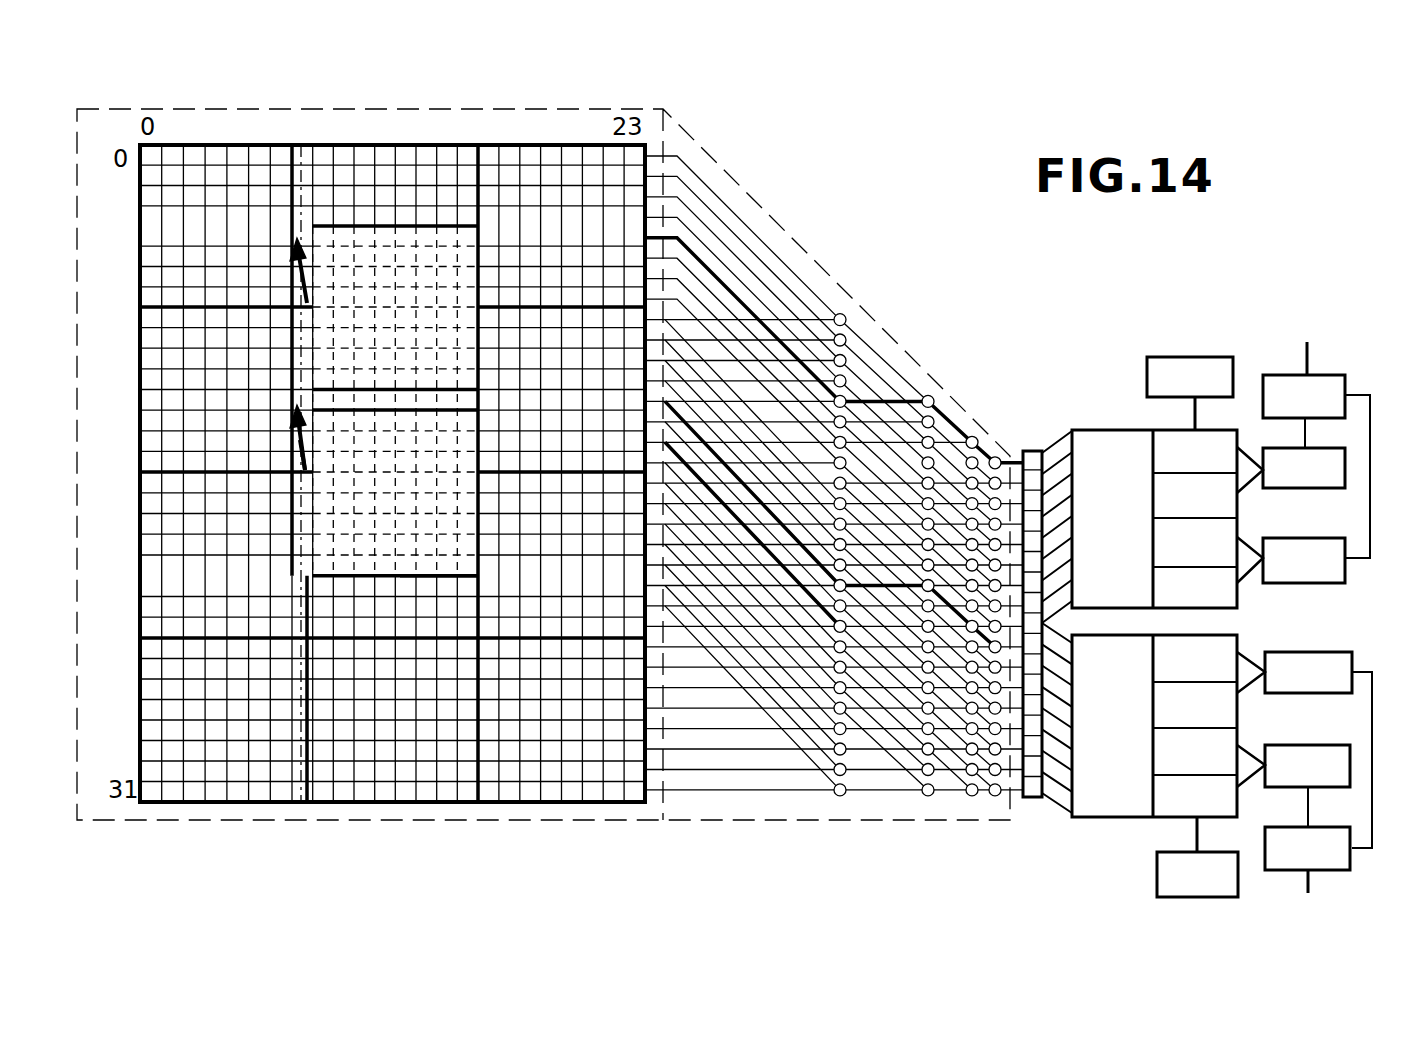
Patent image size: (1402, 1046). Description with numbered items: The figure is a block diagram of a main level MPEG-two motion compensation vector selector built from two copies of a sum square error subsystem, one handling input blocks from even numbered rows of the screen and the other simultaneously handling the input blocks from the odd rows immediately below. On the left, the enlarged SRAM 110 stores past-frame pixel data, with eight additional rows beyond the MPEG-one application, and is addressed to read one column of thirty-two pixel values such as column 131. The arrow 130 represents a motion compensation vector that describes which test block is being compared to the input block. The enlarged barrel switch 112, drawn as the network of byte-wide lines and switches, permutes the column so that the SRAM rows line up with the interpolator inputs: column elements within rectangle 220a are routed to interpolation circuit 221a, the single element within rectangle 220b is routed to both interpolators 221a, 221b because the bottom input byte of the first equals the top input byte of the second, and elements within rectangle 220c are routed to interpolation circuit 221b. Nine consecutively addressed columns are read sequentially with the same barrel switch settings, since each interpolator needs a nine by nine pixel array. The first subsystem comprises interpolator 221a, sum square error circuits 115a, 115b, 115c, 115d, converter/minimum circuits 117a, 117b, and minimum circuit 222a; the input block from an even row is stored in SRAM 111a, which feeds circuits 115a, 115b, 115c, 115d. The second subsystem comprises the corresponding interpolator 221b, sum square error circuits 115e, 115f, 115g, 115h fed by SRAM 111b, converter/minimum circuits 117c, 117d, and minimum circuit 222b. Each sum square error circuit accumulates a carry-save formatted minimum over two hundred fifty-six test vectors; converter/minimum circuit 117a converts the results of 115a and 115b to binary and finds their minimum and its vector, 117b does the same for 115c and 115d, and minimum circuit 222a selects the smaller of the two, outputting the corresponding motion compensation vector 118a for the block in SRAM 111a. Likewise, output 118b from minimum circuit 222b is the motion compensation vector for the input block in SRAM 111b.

The SRAM 110 is at (480, 108).
The barrel switch 112 is at (948, 371).
The arrow 130 is at (294, 242).
The column 131 is at (302, 145).
The rectangle 220a is at (428, 226).
The rectangle 220b is at (365, 410).
The rectangle 220c is at (430, 578).
The interpolation circuit 221a is at (1154, 519).
The interpolation circuit 221b is at (1154, 726).
The sum square error circuit 115a is at (1195, 455).
The sum square error circuit 115b is at (1195, 501).
The sum square error circuit 115c is at (1195, 549).
The sum square error circuit 115d is at (1195, 591).
The sum square error circuit 115e is at (1195, 664).
The sum square error circuit 115f is at (1195, 710).
The sum square error circuit 115g is at (1195, 757).
The sum square error circuit 115h is at (1195, 800).
The SRAM 111a is at (1190, 393).
The SRAM 111b is at (1197, 857).
The converter/minimum circuit 117a is at (1291, 470).
The converter/minimum circuit 117b is at (1291, 560).
The converter/minimum circuit 117c is at (1304, 750).
The converter/minimum circuit 117d is at (1293, 766).
The minimum circuit 222a is at (1316, 466).
The minimum circuit 222b is at (1307, 828).
The motion compensation vector output 118a is at (1313, 343).
The motion compensation vector output 118b is at (1313, 900).